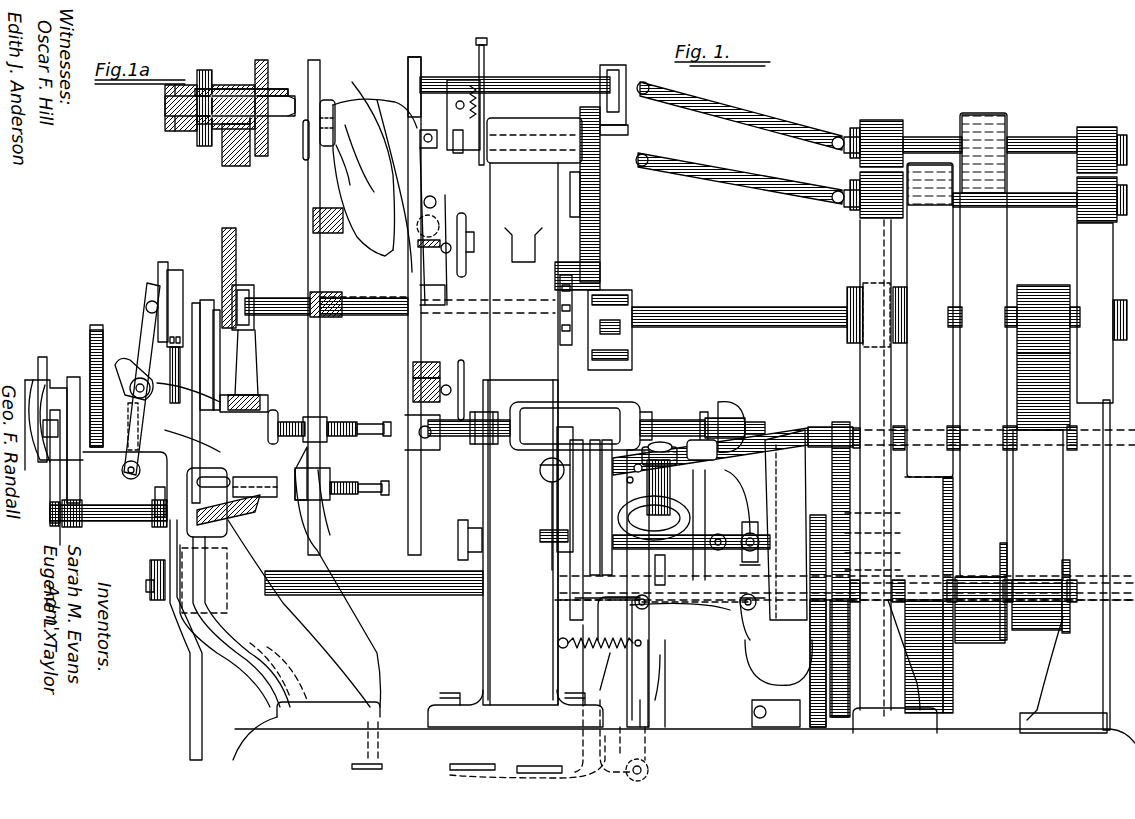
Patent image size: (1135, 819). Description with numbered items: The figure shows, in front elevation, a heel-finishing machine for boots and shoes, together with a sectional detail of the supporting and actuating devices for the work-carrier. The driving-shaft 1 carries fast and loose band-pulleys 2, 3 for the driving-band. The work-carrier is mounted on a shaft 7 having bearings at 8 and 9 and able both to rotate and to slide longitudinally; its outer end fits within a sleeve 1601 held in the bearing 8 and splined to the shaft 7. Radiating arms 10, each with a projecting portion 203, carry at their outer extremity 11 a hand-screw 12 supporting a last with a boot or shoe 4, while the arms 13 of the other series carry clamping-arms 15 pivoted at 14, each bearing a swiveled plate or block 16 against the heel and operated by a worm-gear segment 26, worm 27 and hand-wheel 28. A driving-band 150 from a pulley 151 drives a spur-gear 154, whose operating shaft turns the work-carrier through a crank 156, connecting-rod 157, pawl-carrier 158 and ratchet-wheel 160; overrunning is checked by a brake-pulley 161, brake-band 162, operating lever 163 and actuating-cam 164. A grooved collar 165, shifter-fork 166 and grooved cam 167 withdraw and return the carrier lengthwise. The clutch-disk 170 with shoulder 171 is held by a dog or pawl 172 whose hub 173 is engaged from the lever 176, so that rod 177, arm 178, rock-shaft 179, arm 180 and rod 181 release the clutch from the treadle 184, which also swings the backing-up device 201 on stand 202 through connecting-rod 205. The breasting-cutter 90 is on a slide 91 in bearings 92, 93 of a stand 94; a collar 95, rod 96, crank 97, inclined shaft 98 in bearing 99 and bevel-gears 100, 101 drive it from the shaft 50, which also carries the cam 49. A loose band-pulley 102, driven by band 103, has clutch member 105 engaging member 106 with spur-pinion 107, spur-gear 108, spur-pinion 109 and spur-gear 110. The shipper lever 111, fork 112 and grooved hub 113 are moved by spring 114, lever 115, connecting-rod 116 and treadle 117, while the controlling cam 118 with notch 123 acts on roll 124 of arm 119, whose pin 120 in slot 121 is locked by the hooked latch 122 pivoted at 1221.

In FIG. 1, the driving-shaft 1 is at (410, 572).
In FIG. 1, the fast band-pulley 2 is at (560, 628).
In FIG. 1, the loose band-pulley 3 is at (655, 677).
In FIG. 1, the boot or shoe 4 is at (376, 100).
In FIG. 1A, the shaft 7 is at (290, 95).
In FIG. 1, the shaft 7 is at (287, 298).
In FIG. 1A, the bearing 8 is at (233, 82).
In FIG. 1, the bearing 8 is at (206, 262).
In FIG. 1, the bearing 9 is at (508, 250).
In FIG. 1, the arm 10 is at (332, 198).
In FIG. 1, the outer extremity 11 is at (328, 126).
In FIG. 1, the hand-screw 12 is at (305, 140).
In FIG. 1, the arm 13 is at (383, 217).
In FIG. 1, the pivot 14 is at (437, 200).
In FIG. 1, the clamping-arm 15 is at (430, 167).
In FIG. 1, the plate or block 16 is at (352, 84).
In FIG. 1, the worm-gear segment 26 is at (330, 220).
In FIG. 1, the worm 27 is at (318, 292).
In FIG. 1, the hand-wheel 28 is at (478, 246).
In FIG. 1, the cam 49 is at (575, 500).
In FIG. 1, the shaft 50 is at (540, 545).
In FIG. 1, the breasting-cutter 90 is at (410, 440).
In FIG. 1, the slide or plunger 91 is at (535, 420).
In FIG. 1, the bearing 92 is at (510, 448).
In FIG. 1, the bearing 93 is at (650, 412).
In FIG. 1, the stand 94 is at (575, 426).
In FIG. 1, the collar 95 is at (727, 402).
In FIG. 1, the rod 96 is at (693, 410).
In FIG. 1, the crank 97 is at (700, 470).
In FIG. 1, the inclined shaft 98 is at (625, 430).
In FIG. 1, the bearing 99 is at (628, 480).
In FIG. 1, the bevel-gear 100 is at (620, 520).
In FIG. 1, the bevel-gear 101 is at (685, 567).
In FIG. 1, the loose band-pulley 102 is at (720, 635).
In FIG. 1, the band 103 is at (778, 432).
In FIG. 1, the friction-clutch member 105 is at (768, 430).
In FIG. 1, the friction-clutch member 106 is at (843, 420).
In FIG. 1, the spur-pinion 107 is at (815, 515).
In FIG. 1, the spur-gear 108 is at (815, 735).
In FIG. 1, the spur-pinion 109 is at (838, 722).
In FIG. 1, the spur-gear 110 is at (815, 400).
In FIG. 1, the lever 111 is at (748, 695).
In FIG. 1, the fork 112 is at (745, 568).
In FIG. 1, the grooved hub 113 is at (782, 480).
In FIG. 1, the spring 114 is at (612, 655).
In FIG. 1, the lever 115 is at (645, 708).
In FIG. 1, the connecting-rod 116 is at (750, 620).
In FIG. 1, the treadle 117 is at (462, 762).
In FIG. 1, the controlling cam 118 is at (702, 525).
In FIG. 1, the arm 119 is at (705, 680).
In FIG. 1, the pin 120 is at (660, 660).
In FIG. 1, the slot 121 is at (740, 605).
In FIG. 1, the hooked latch 122 is at (715, 598).
In FIG. 1, the pivot 1221 is at (560, 608).
In FIG. 1, the notch or depression 123 is at (718, 530).
In FIG. 1, the pin or roll 124 is at (752, 532).
In FIG. 1, the driving-band 150 is at (158, 560).
In FIG. 1, the pulley 151 is at (148, 580).
In FIG. 1, the spur-gear 154 is at (95, 328).
In FIG. 1, the crank 156 is at (262, 405).
In FIG. 1, the connecting-rod 157 is at (258, 365).
In FIG. 1, the pawl-carrier 158 is at (245, 330).
In FIG. 1A, the ratchet-wheel 160 is at (263, 57).
In FIG. 1, the ratchet-wheel 160 is at (230, 250).
In FIG. 1A, the brake-pulley 161 is at (203, 67).
In FIG. 1, the brake-pulley 161 is at (165, 268).
In FIG. 1, the brake-band 162 is at (175, 262).
In FIG. 1, the operating lever 163 is at (165, 418).
In FIG. 1, the actuating-cam 164 is at (210, 447).
In FIG. 1A, the grooved collar 165 is at (168, 130).
In FIG. 1, the grooved collar 165 is at (165, 270).
In FIG. 1, the shifter-fork 166 is at (145, 322).
In FIG. 1, the grooved cam 167 is at (138, 372).
In FIG. 1, the disk 170 is at (92, 330).
In FIG. 1, the shoulder 171 is at (44, 360).
In FIG. 1, the controlling dog or pawl 172 is at (78, 403).
In FIG. 1, the hub 173 is at (120, 475).
In FIG. 1, the lever 176 is at (43, 433).
In FIG. 1, the rod 177 is at (55, 455).
In FIG. 1, the arm 178 is at (62, 530).
In FIG. 1, the rock-shaft 179 is at (160, 525).
In FIG. 1, the arm 180 is at (160, 503).
In FIG. 1, the rod 181 is at (188, 680).
In FIG. 1, the treadle 184 is at (360, 760).
In FIG. 1, the backing-up device 201 is at (300, 460).
In FIG. 1, the stand 202 is at (263, 512).
In FIG. 1, the projecting portion 203 is at (410, 62).
In FIG. 1, the connecting-rod 205 is at (322, 547).
In FIG. 1A, the sleeve 1601 is at (236, 125).